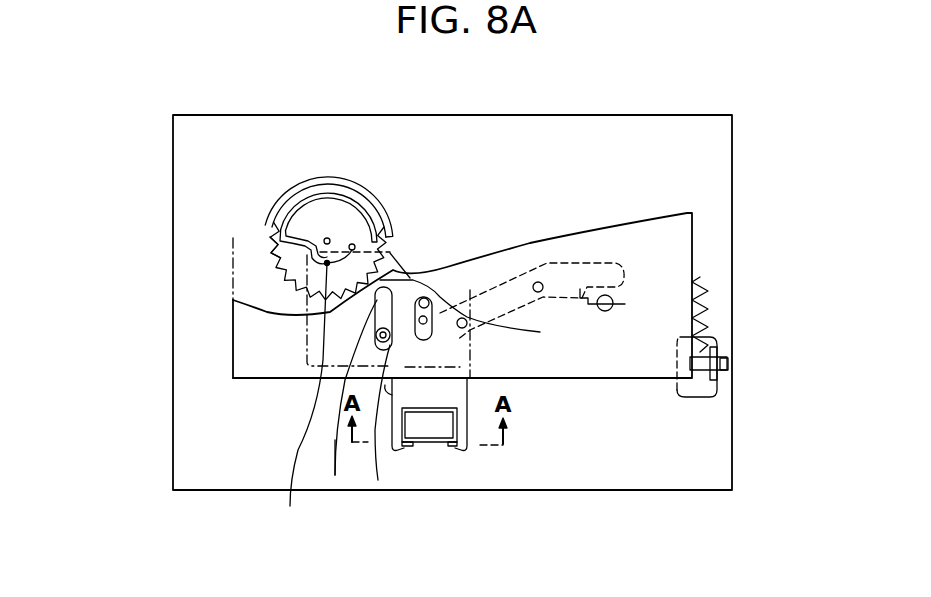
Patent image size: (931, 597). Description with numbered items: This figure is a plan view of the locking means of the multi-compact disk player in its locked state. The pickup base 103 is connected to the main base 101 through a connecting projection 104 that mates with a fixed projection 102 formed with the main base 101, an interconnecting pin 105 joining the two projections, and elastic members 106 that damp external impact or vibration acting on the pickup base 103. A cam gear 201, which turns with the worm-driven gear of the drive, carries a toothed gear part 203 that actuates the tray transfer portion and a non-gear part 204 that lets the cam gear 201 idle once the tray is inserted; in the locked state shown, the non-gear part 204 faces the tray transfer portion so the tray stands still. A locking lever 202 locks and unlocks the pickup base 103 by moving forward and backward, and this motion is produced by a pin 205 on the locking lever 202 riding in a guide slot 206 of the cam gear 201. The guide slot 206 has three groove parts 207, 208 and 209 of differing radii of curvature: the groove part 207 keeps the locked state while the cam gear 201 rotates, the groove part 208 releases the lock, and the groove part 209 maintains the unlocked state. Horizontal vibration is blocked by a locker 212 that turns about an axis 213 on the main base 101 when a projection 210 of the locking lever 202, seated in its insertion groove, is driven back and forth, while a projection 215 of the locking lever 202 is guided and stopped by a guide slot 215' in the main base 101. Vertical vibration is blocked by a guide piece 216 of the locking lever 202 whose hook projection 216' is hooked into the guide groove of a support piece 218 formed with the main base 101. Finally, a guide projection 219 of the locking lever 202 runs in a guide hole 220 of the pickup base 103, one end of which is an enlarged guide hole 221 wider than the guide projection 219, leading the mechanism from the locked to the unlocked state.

The main base 101 is at (732, 178).
The fixed projection 102 is at (713, 380).
The pickup base 103 is at (692, 242).
The connecting projection 104 is at (607, 311).
The interconnecting pin 105 is at (708, 383).
The elastic members 106 is at (710, 303).
The cam gear 201 is at (355, 197).
The locking lever 202 is at (393, 403).
The gear part 203 is at (280, 280).
The non-gear part 204 is at (387, 200).
The pin 205 is at (299, 399).
The guide slot 206 is at (377, 222).
The groove part 207 is at (307, 255).
The groove part 208 is at (267, 257).
The groove part 209 is at (332, 195).
The projection 210 is at (530, 273).
The locker 212 is at (327, 238).
The axis 213 is at (547, 280).
The projection 215 is at (369, 421).
The guide slot 215' is at (341, 497).
The guide piece 216 is at (476, 480).
The hook projection 216' is at (477, 512).
The support piece 218 is at (436, 446).
The guide projection 219 is at (462, 318).
The guide hole 220 is at (430, 340).
The guide hole 221 is at (424, 302).